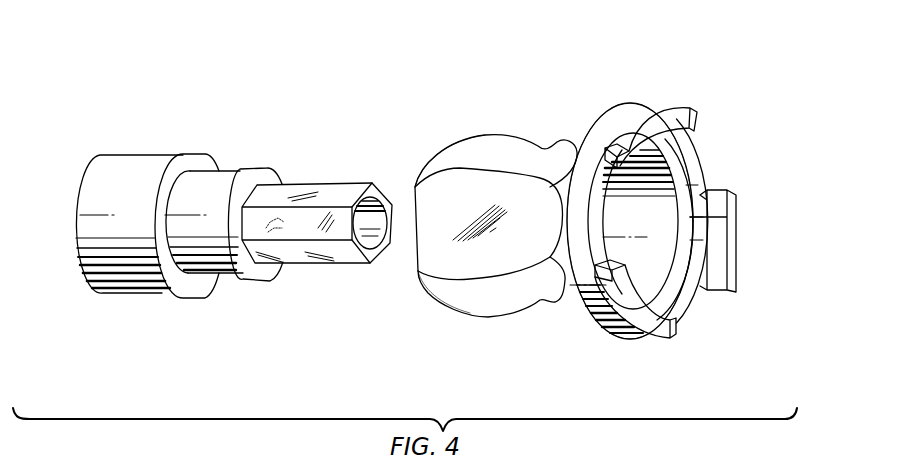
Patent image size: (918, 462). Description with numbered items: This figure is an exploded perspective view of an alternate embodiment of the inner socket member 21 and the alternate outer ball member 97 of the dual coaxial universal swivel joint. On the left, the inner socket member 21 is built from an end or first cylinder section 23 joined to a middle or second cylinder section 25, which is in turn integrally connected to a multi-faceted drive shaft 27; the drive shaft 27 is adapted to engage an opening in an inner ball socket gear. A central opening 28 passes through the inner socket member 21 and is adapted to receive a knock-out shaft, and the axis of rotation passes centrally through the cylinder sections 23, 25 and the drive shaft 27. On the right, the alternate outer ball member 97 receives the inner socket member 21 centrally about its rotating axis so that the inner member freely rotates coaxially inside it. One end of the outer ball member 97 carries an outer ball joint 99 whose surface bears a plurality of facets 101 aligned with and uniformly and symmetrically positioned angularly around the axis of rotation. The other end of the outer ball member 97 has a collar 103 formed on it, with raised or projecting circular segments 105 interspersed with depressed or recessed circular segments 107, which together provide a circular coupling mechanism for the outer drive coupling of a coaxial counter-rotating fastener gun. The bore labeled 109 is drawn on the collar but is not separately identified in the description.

The inner socket member 21 is at (153, 155).
The first cylinder section 23 is at (93, 243).
The second cylinder section 25 is at (240, 170).
The multi-faceted drive shaft 27 is at (330, 190).
The central opening 28 is at (372, 245).
The alternate outer ball member 97 is at (574, 144).
The outer ball joint 99 is at (505, 136).
The facets 101 is at (465, 162).
The collar 103 is at (633, 103).
The raised circular segments 105 is at (682, 113).
The recessed circular segments 107 is at (593, 252).
The bore 109 is at (657, 220).